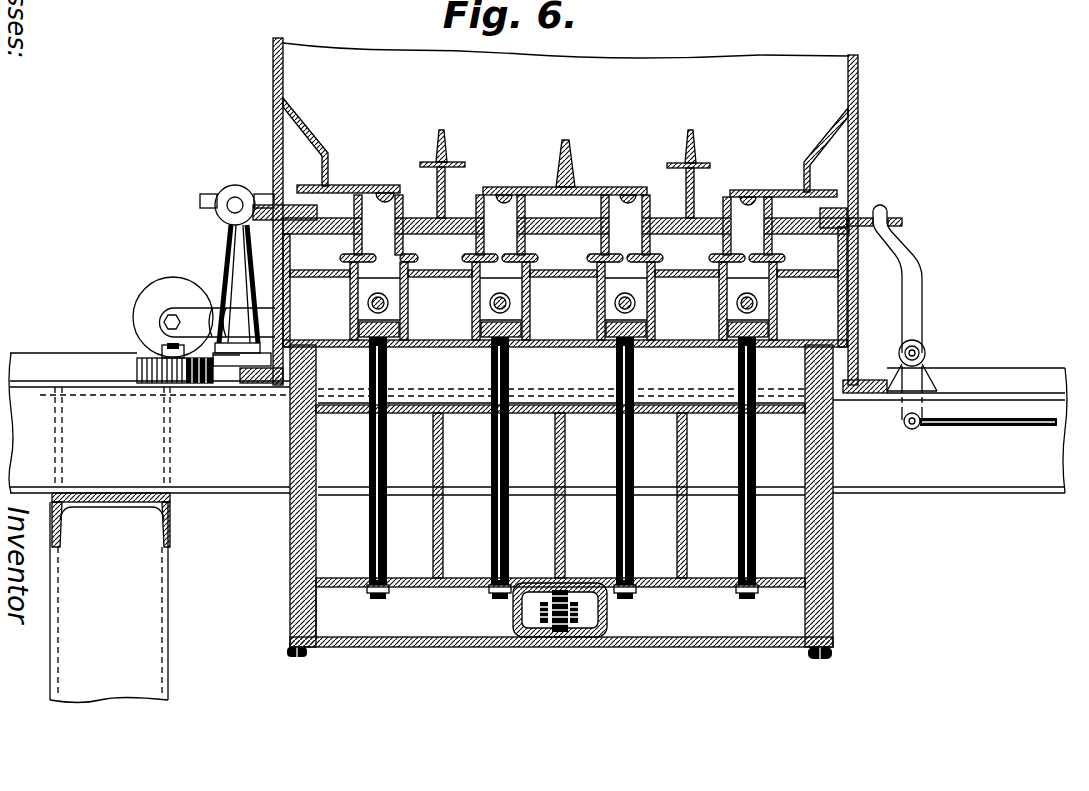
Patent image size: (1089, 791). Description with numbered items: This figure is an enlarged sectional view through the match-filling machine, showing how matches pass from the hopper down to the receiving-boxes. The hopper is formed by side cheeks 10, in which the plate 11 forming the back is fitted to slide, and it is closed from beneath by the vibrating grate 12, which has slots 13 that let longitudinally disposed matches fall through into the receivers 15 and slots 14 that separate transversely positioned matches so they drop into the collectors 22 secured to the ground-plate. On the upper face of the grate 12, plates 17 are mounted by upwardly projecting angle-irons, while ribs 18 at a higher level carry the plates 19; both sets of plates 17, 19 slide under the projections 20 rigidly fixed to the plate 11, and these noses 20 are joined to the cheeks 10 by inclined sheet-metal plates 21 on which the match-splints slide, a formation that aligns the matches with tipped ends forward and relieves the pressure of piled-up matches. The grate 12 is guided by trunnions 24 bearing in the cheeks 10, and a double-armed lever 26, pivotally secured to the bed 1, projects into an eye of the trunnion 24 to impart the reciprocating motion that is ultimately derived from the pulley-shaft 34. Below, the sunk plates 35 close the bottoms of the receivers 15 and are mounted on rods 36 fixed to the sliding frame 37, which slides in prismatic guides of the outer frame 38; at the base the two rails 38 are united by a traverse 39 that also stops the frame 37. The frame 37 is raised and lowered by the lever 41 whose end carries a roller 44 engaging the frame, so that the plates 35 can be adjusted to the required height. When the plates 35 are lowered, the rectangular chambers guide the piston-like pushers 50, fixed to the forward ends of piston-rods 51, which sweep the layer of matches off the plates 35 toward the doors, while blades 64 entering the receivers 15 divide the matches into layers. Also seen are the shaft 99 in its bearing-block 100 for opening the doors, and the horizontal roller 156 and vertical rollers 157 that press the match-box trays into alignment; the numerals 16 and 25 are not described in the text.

The bed 1 is at (538, 528).
The side cheeks 10 is at (274, 84).
The plate 11 is at (566, 67).
The vibrating grate 12 is at (858, 210).
The slots 13 is at (370, 226).
The slots 14 is at (452, 222).
The receivers 15 is at (499, 241).
The plate 16 is at (783, 202).
The plates 17 is at (369, 190).
The ribs 18 is at (694, 182).
The plates 19 is at (706, 165).
The projections 20 is at (328, 168).
The inclined sheet-metal plates 21 is at (306, 129).
The collectors 22 is at (565, 287).
The trunnions 24 is at (903, 223).
The pivot 25 is at (926, 356).
The double-armed lever 26 is at (922, 283).
The pulley-shaft 34 is at (660, 590).
The sunk plates 35 is at (400, 326).
The rods 36 is at (387, 448).
The sliding frame 37 is at (318, 611).
The outer frame 38 is at (292, 551).
The traverse 39 is at (648, 649).
The lever 41 is at (572, 626).
The roller 44 is at (578, 623).
The piston-like pushers 50 is at (563, 306).
The piston-rods 51 is at (624, 297).
The blades 64 is at (366, 259).
The shaft 99 is at (237, 198).
The bearing-block 100 is at (234, 266).
The horizontal roller 156 is at (137, 372).
The vertical rollers 157 is at (141, 318).